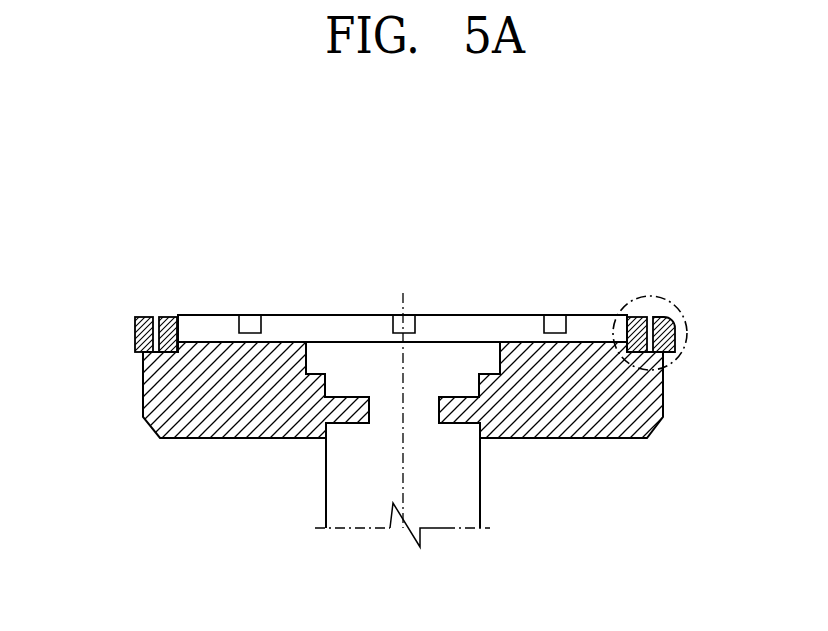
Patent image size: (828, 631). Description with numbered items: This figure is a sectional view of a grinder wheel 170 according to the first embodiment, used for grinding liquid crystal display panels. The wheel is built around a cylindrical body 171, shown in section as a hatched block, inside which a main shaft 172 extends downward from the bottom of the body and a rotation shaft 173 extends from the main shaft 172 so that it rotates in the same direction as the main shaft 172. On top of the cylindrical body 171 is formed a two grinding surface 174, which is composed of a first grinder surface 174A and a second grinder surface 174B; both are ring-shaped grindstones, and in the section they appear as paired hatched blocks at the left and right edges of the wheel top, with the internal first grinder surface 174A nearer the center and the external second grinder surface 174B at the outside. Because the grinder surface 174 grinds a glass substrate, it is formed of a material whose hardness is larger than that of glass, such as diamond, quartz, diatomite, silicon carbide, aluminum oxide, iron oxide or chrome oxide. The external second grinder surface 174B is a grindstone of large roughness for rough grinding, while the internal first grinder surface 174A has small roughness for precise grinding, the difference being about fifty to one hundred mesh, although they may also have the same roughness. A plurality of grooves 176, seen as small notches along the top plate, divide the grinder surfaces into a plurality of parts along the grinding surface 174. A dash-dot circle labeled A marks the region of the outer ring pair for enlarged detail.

The grinder wheel 170 is at (58, 205).
The cylindrical body 171 is at (663, 402).
The main shaft 172 is at (473, 498).
The rotation shaft 173 is at (433, 403).
The two grinding surface 174 is at (391, 291).
The first grinder surface 174A is at (168, 318).
The second grinder surface 174B is at (141, 318).
The grooves 176 is at (251, 315).
The detail region A is at (678, 312).